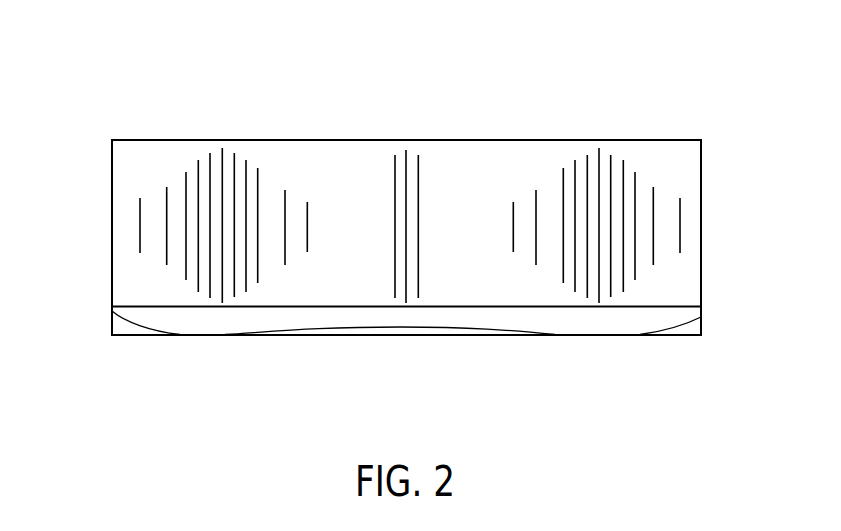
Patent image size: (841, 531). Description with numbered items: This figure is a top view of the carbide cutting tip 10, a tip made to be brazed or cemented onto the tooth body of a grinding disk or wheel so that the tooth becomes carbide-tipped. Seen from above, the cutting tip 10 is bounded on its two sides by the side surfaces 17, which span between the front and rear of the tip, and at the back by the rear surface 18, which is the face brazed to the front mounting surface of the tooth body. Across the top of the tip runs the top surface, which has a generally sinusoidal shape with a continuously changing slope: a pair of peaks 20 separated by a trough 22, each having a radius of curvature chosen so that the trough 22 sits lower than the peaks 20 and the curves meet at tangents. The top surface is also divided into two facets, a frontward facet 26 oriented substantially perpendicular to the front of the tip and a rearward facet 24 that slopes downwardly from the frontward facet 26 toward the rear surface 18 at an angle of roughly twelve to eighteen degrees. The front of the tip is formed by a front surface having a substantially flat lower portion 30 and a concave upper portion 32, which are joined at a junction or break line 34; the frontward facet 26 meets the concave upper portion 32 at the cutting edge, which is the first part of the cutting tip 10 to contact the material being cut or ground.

The carbide cutting tip 10 is at (642, 75).
The side surfaces 17 is at (112, 189).
The rear surface 18 is at (342, 140).
The peaks 20 is at (201, 287).
The trough 22 is at (442, 282).
The rearward facet 24 is at (677, 215).
The frontward facet 26 is at (678, 313).
The lower portion 30 is at (399, 337).
The upper portion 32 is at (358, 328).
The break line 34 is at (406, 381).